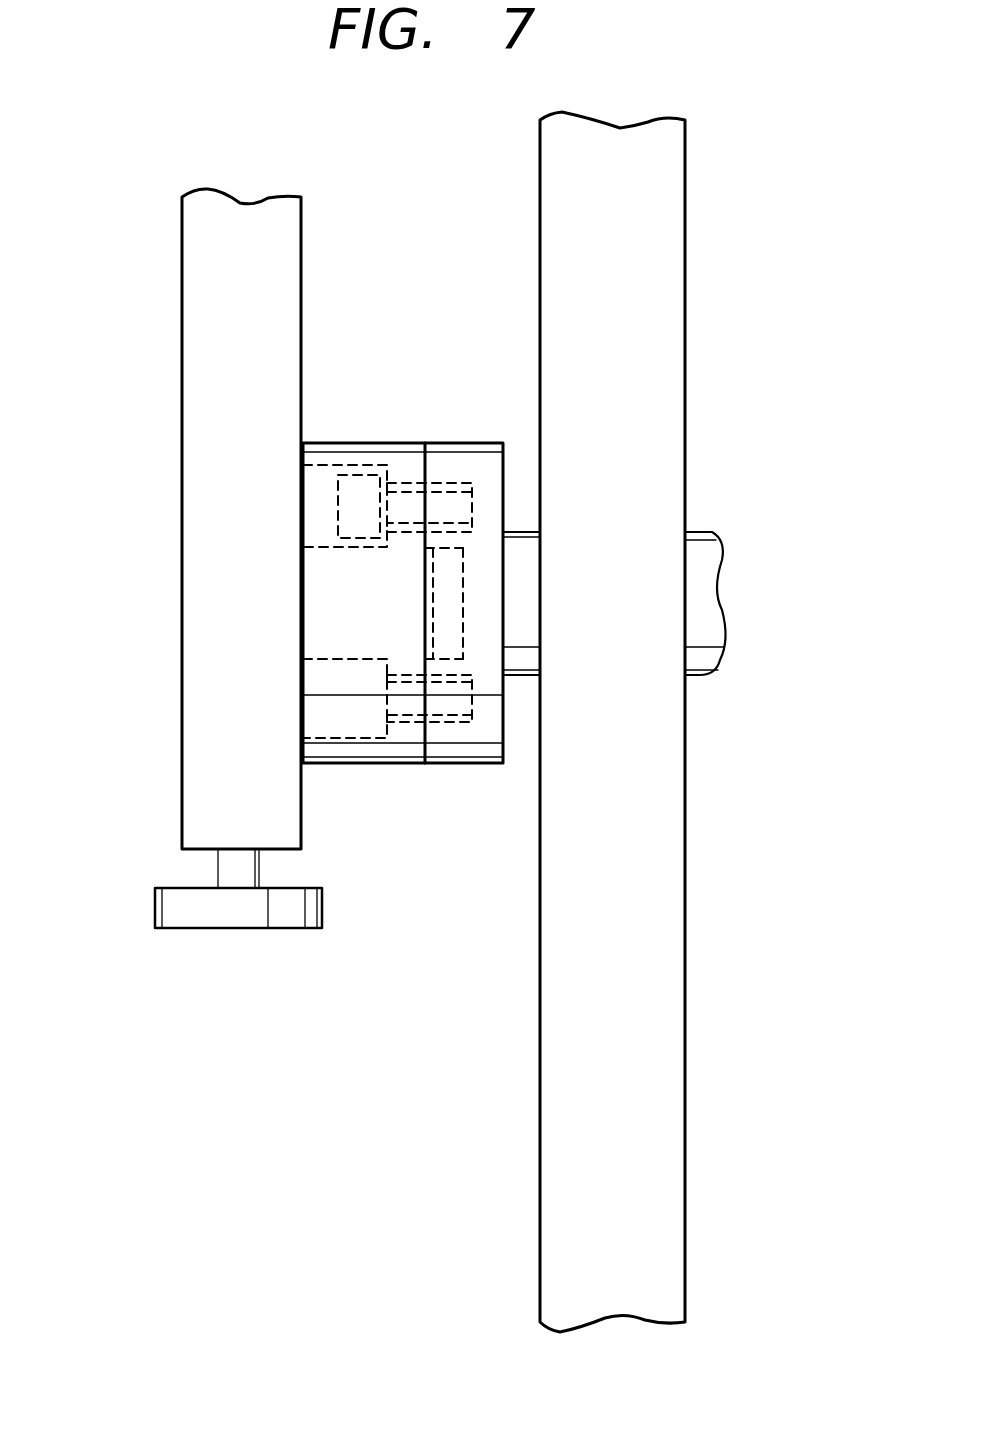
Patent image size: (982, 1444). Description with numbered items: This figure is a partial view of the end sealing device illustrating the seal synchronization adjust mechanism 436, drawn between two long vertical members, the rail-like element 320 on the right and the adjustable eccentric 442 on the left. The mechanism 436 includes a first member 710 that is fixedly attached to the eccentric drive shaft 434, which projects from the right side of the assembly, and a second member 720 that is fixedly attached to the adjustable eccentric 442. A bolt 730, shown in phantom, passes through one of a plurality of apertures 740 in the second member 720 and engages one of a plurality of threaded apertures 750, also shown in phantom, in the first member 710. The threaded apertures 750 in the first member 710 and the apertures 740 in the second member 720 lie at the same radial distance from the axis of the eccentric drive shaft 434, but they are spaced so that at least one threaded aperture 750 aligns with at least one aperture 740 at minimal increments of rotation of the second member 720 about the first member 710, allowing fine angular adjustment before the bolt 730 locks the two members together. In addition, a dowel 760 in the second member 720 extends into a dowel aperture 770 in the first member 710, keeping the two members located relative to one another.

The rail 320 is at (685, 1213).
The eccentric drive shaft 434 is at (525, 530).
The seal synchronization adjust mechanism 436 is at (375, 764).
The adjustable eccentric 442 is at (182, 328).
The first member 710 is at (478, 443).
The second member 720 is at (387, 443).
The bolt 730 is at (357, 490).
The apertures 740 is at (303, 535).
The threaded apertures 750 is at (475, 503).
The dowel 760 is at (438, 641).
The dowel aperture 770 is at (458, 624).